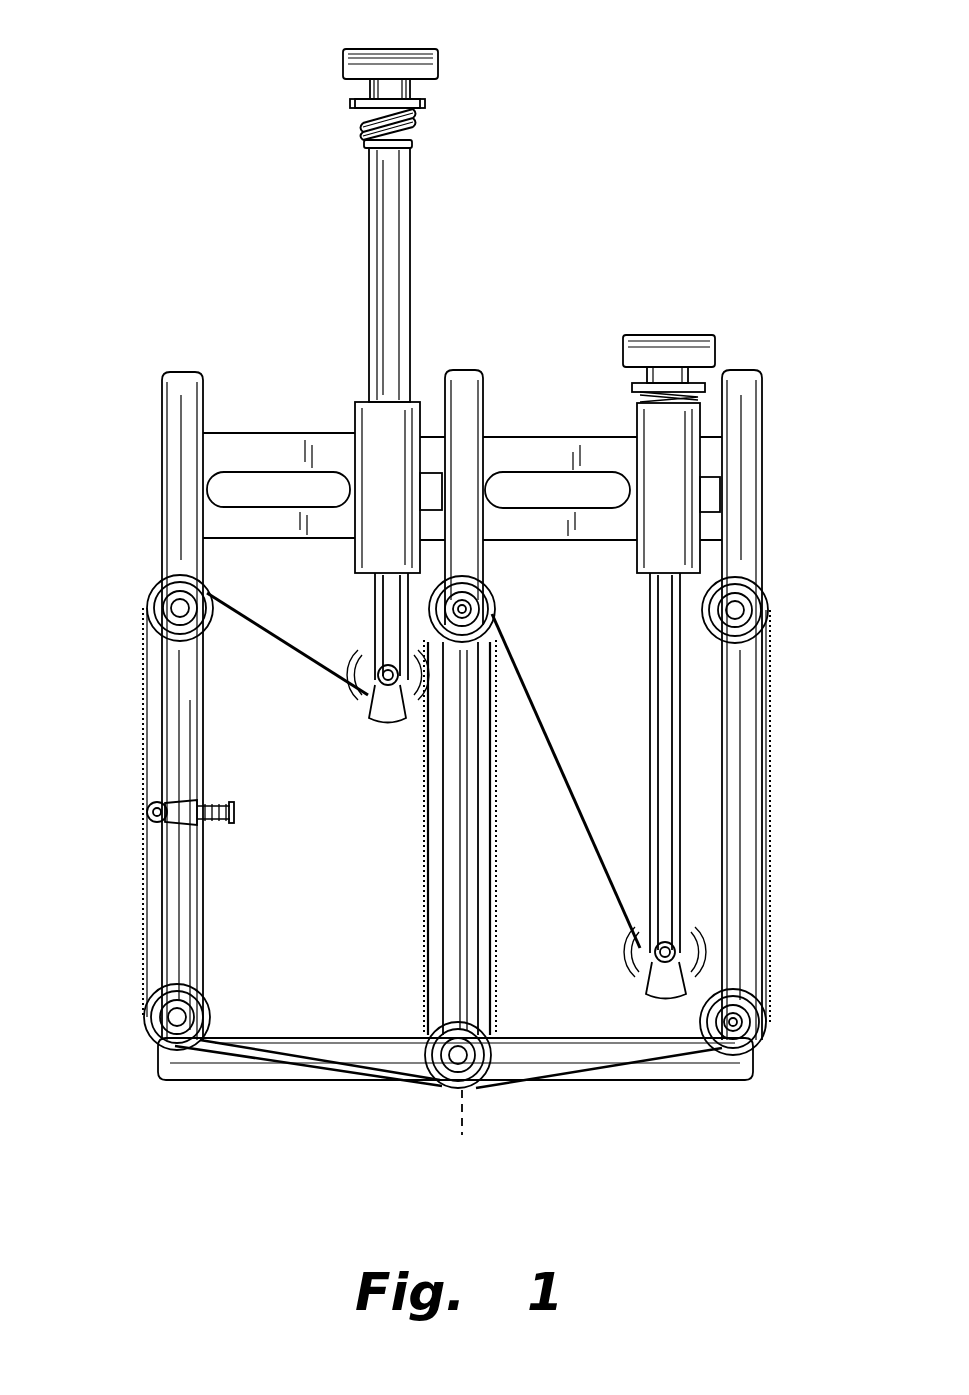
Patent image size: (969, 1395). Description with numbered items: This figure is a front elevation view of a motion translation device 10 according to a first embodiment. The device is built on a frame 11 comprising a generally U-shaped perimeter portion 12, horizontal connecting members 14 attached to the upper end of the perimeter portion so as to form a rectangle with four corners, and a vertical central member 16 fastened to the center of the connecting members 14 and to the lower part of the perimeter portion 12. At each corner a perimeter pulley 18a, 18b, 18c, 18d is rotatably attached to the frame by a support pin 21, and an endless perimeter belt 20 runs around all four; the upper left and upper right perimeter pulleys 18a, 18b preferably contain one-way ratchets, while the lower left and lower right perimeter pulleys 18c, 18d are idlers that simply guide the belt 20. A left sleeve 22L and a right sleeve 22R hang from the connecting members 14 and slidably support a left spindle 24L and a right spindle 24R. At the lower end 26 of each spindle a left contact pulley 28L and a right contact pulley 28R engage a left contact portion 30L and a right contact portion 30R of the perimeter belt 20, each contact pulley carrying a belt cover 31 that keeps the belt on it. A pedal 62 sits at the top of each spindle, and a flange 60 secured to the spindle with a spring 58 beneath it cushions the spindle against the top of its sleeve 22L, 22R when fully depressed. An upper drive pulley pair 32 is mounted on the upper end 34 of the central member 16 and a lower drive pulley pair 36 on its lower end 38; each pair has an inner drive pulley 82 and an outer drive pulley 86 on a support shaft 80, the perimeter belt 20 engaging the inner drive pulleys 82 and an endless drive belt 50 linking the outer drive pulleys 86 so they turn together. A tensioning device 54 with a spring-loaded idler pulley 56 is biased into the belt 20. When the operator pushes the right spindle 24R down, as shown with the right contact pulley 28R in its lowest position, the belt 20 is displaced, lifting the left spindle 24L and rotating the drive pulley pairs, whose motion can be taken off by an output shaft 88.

The motion translation device 10 is at (592, 220).
The frame 11 is at (168, 460).
The U-shaped perimeter portion 12 is at (190, 697).
The horizontal connecting members 14 is at (236, 460).
The vertical central member 16 is at (470, 385).
The upper left perimeter pulley 18a is at (152, 593).
The upper right perimeter pulley 18b is at (765, 612).
The lower left perimeter pulley 18c is at (148, 1032).
The lower right perimeter pulley 18d is at (765, 1028).
The endless perimeter belt 20 is at (145, 905).
The support pin 21 is at (735, 1026).
The left sleeve 22L is at (378, 470).
The right sleeve 22R is at (663, 477).
The left spindle 24L is at (372, 312).
The right spindle 24R is at (662, 810).
The lower end 26 is at (383, 642).
The left contact pulley 28L is at (368, 690).
The right contact pulley 28R is at (648, 960).
The left contact portion 30L is at (282, 632).
The right contact portion 30R is at (569, 745).
The belt cover 31 is at (382, 708).
The upper drive pulley pair 32 is at (500, 668).
The upper end 34 is at (470, 600).
The lower drive pulley pair 36 is at (445, 1103).
The lower end 38 is at (458, 1003).
The endless drive belt 50 is at (440, 995).
The tensioning device 54 is at (222, 796).
The spring-loaded idler pulley 56 is at (147, 808).
The spring 58 is at (416, 138).
The flange 60 is at (353, 102).
The pedal 62 is at (352, 48).
The support shaft 80 is at (462, 1058).
The inner drive pulley 82 is at (485, 648).
The outer drive pulley 86 is at (483, 630).
The output shaft 88 is at (466, 610).